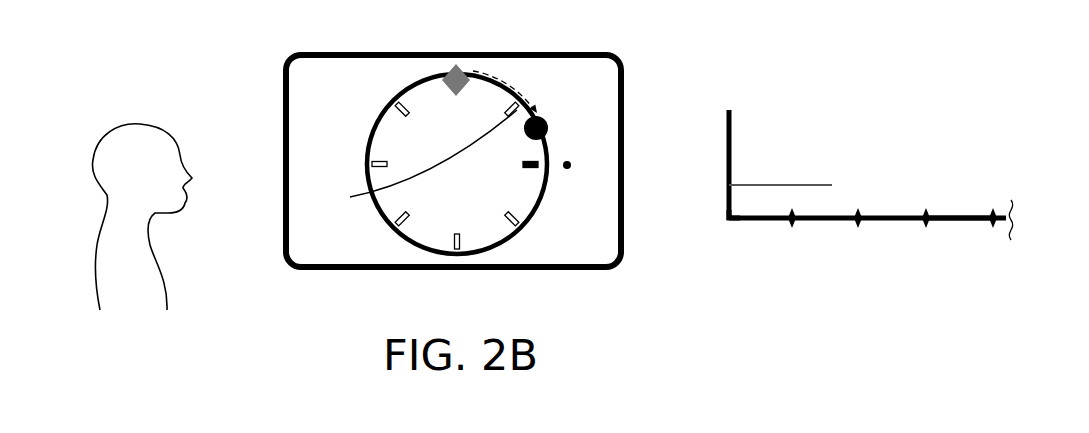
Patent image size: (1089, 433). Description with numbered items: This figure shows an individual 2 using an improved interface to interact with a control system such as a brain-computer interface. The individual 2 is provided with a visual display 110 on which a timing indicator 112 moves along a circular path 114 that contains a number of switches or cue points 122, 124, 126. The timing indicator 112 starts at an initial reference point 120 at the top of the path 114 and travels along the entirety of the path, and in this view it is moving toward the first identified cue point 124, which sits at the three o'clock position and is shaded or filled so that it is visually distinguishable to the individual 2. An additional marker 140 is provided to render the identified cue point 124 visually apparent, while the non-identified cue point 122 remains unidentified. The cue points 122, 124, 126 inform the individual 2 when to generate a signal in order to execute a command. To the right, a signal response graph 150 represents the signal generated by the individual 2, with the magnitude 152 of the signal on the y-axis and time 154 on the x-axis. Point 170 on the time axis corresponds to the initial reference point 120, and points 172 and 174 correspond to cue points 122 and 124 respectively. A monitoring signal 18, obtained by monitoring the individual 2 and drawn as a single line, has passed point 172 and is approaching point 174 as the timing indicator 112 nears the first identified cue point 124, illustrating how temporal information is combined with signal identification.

The individual 2 is at (113, 266).
The visual display 110 is at (328, 276).
The timing indicator 112 is at (546, 117).
The path 114 is at (375, 128).
The initial reference point 120 is at (456, 66).
The cue point 122 is at (412, 156).
The first identified cue point 124 is at (533, 170).
The cue point 126 is at (505, 218).
The marker 140 is at (572, 160).
The signal response graph 150 is at (970, 262).
The magnitude 152 is at (735, 113).
The time 154 is at (962, 212).
The point 170 is at (725, 220).
The point 172 is at (792, 227).
The point 174 is at (858, 227).
The monitoring signal 18 is at (760, 184).